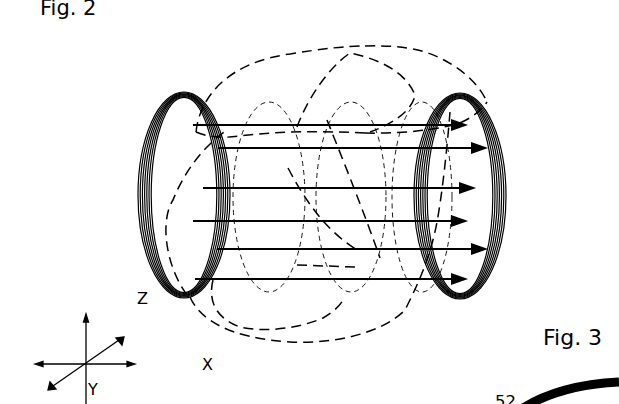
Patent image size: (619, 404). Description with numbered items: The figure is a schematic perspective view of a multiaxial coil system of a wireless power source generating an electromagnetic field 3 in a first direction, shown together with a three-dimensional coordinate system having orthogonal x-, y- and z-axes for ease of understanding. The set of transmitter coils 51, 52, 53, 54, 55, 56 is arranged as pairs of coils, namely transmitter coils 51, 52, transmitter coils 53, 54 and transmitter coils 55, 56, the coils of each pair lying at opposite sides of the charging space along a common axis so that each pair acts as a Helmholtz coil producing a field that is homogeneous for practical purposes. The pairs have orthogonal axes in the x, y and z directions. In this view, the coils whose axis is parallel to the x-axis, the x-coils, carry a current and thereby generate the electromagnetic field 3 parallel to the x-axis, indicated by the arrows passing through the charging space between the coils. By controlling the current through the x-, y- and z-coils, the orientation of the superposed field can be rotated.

The electromagnetic field 3 is at (290, 138).
The transmitter coil 51 is at (410, 366).
The transmitter coil 52 is at (242, 66).
The transmitter coil 53 is at (506, 188).
The transmitter coil 54 is at (139, 192).
The transmitter coil 55 is at (467, 82).
The transmitter coil 56 is at (343, 300).